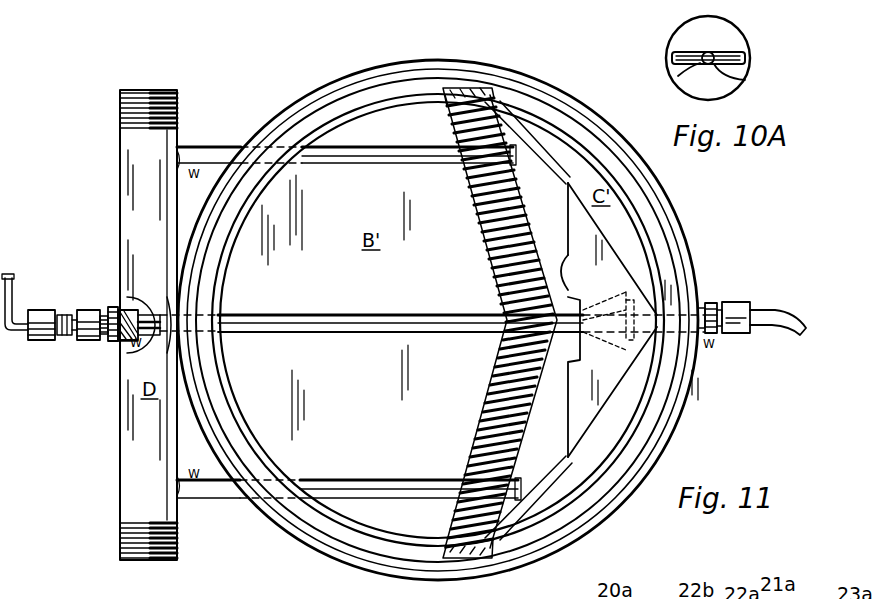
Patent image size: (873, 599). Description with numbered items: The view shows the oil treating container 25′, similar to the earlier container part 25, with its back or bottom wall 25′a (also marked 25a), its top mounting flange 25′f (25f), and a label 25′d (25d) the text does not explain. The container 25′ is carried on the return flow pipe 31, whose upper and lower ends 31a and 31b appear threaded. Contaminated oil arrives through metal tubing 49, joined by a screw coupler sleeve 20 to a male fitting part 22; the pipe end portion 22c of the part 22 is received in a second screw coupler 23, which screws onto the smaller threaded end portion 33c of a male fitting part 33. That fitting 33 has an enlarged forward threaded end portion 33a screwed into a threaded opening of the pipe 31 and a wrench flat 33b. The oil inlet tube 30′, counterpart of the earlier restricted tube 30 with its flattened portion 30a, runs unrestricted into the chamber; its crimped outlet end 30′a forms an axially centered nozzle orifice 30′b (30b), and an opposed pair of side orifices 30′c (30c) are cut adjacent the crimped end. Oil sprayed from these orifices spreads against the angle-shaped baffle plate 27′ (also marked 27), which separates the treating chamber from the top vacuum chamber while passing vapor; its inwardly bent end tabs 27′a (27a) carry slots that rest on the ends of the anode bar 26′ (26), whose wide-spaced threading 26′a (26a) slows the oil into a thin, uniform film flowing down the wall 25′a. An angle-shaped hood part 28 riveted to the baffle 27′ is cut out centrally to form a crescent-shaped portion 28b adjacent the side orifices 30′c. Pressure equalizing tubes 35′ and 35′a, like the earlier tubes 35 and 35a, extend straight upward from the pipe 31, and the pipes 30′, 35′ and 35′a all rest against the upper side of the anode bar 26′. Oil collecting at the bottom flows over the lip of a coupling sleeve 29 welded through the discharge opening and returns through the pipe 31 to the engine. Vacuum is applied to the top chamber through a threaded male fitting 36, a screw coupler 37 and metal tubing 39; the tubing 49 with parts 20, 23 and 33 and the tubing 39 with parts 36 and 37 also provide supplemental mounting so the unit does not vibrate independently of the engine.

In FIG. 11, the screw coupler sleeve 20 is at (50, 311).
In FIG. 11, the male fitting part 22 is at (62, 313).
In FIG. 11, the pipe end portion 22c is at (67, 338).
In FIG. 11, the screw coupler 23 is at (95, 310).
In FIG. 11, the container 25′ is at (438, 302).
In FIG. 11, the back or bottom wall 25′a is at (438, 335).
In FIG. 11, the weld joint 25′d is at (216, 322).
In FIG. 11, the top mounting flange 25′f is at (438, 308).
In FIG. 11, the anode bar 26′ is at (497, 321).
In FIG. 11, the threading 26′a is at (468, 321).
In FIG. 11, the baffle plate 27′ is at (533, 320).
In FIG. 11, the end tabs 27′a is at (437, 323).
In FIG. 11, the hood part 28 is at (597, 403).
In FIG. 11, the crescent-shaped portion 28b is at (568, 272).
In FIG. 11, the coupling sleeve 29 is at (168, 297).
In FIG. 10A, the oil inlet tube 30′ is at (721, 50).
In FIG. 11, the oil inlet tube 30′ is at (432, 306).
In FIG. 10A, the outlet end 30′a is at (653, 70).
In FIG. 11, the outlet end 30′a is at (608, 287).
In FIG. 10A, the nozzle orifice 30′b is at (754, 77).
In FIG. 11, the nozzle orifice 30′b is at (610, 330).
In FIG. 11, the side orifices 30′c is at (605, 312).
In FIG. 11, the return flow pipe 31 is at (120, 177).
In FIG. 11, the threaded upper end 31a is at (120, 108).
In FIG. 11, the threaded lower end 31b is at (120, 530).
In FIG. 11, the male fitting part 33 is at (111, 306).
In FIG. 11, the enlarged threaded end portion 33a is at (135, 310).
In FIG. 11, the wrench flat 33b is at (118, 345).
In FIG. 11, the reduced threaded end portion 33c is at (105, 336).
In FIG. 11, the pressure equalizing tube 35′ is at (346, 169).
In FIG. 11, the pressure equalizing tube 35′a is at (349, 474).
In FIG. 11, the negative pressure fitting 36 is at (711, 303).
In FIG. 11, the screw coupler part 37 is at (745, 302).
In FIG. 11, the metal tubing 39 is at (780, 312).
In FIG. 11, the metal tubing 49 is at (16, 288).
In FIG. 11, the container part 25 is at (440, 58).
In FIG. 11, the inner ring wall 25a is at (338, 512).
In FIG. 11, the weld joint 25d is at (238, 147).
In FIG. 11, the ring flange 25f is at (331, 82).
In FIG. 11, the bellows 26 is at (495, 362).
In FIG. 11, the bellows inner wall 26a is at (495, 388).
In FIG. 11, the baffle 27 is at (538, 158).
In FIG. 11, the bellows end attachment 27a is at (448, 134).
In FIG. 10A, the oil inlet tube 30 is at (735, 27).
In FIG. 11, the oil inlet tube 30 is at (368, 314).
In FIG. 10A, the flattened portion 30a is at (672, 75).
In FIG. 11, the flattened portion 30a is at (608, 287).
In FIG. 10A, the rod leg 30b is at (746, 80).
In FIG. 11, the rod leg 30b is at (610, 330).
In FIG. 11, the rod leg 30c is at (605, 312).
In FIG. 11, the pressure equalizing tube 35 is at (365, 166).
In FIG. 11, the pressure equalizing tube 35a is at (394, 480).